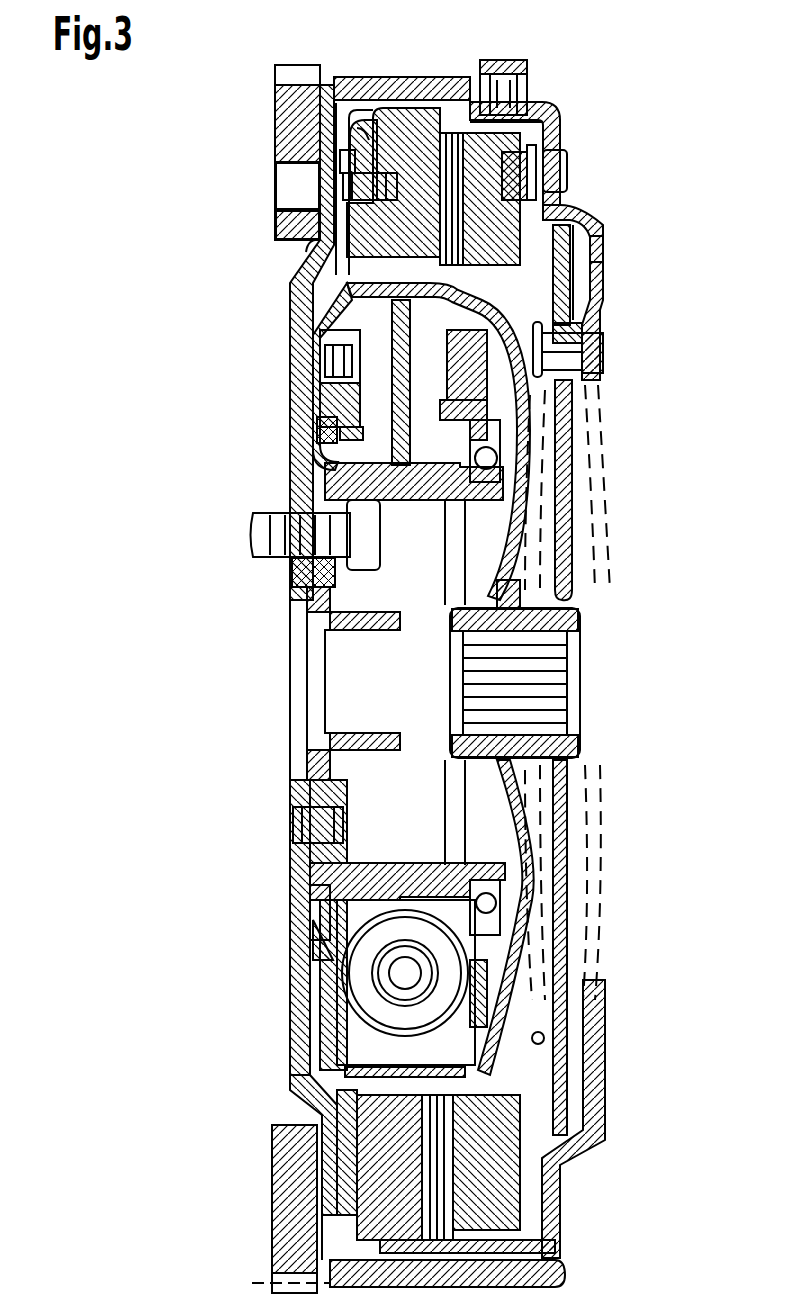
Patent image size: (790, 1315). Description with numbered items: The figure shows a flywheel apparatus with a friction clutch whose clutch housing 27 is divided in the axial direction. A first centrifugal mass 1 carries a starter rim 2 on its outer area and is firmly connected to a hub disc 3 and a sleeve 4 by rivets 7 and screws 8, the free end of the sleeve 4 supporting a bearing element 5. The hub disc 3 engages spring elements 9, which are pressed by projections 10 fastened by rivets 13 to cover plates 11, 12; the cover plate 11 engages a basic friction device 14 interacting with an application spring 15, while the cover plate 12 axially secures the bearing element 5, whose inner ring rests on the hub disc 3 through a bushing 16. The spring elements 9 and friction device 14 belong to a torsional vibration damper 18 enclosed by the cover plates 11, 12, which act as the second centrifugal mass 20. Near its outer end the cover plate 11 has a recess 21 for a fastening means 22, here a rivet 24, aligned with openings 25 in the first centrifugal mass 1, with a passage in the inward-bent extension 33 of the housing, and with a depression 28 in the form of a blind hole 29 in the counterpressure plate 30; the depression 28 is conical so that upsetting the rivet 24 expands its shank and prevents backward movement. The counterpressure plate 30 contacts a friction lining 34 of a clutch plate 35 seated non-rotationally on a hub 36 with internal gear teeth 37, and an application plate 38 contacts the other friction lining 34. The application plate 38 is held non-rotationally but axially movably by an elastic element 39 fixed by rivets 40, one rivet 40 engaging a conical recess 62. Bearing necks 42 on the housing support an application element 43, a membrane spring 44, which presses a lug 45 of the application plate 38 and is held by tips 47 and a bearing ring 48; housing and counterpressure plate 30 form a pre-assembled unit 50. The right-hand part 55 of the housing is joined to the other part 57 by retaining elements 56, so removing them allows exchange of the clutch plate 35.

The first centrifugal mass 1 is at (288, 446).
The starter rim 2 is at (287, 96).
The hub disc 3 is at (340, 402).
The sleeve 4 is at (300, 576).
The bearing element 5 is at (492, 470).
The rivets 7 is at (300, 830).
The screws 8 is at (262, 520).
The spring elements 9 is at (340, 1020).
The projections 10 is at (320, 420).
The cover plate 11 is at (330, 333).
The cover plate 12 is at (492, 412).
The rivets 13 is at (328, 364).
The basic friction device 14 is at (320, 915).
The application spring 15 is at (320, 886).
The bushing 16 is at (332, 480).
The torsional vibration damper 18 is at (322, 976).
The second centrifugal mass 20 is at (322, 301).
The recess 21 is at (345, 162).
The fastening means 22 is at (332, 176).
The rivet 24 is at (285, 222).
The openings 25 is at (285, 190).
The clutch housing 27 is at (556, 100).
The depression 28 is at (313, 246).
The blind hole 29 is at (362, 125).
The counterpressure plate 30 is at (320, 284).
The extension 33 is at (362, 130).
The friction lining 34 is at (455, 130).
The clutch plate 35 is at (515, 303).
The hub 36 is at (572, 624).
The gear teeth 37 is at (550, 640).
The application plate 38 is at (603, 262).
The elastic element 39 is at (536, 162).
The rivet 40 is at (566, 168).
The bearing necks 42 is at (600, 376).
The application element 43 is at (574, 480).
The membrane spring 44 is at (578, 448).
The lug 45 is at (594, 234).
The tips 47 is at (575, 330).
The bearing ring 48 is at (592, 356).
The pre-assembled unit 50 is at (536, 134).
The right-hand part 55 is at (528, 142).
The retaining elements 56 is at (512, 72).
The other part 57 is at (411, 112).
The recess 62 is at (577, 216).